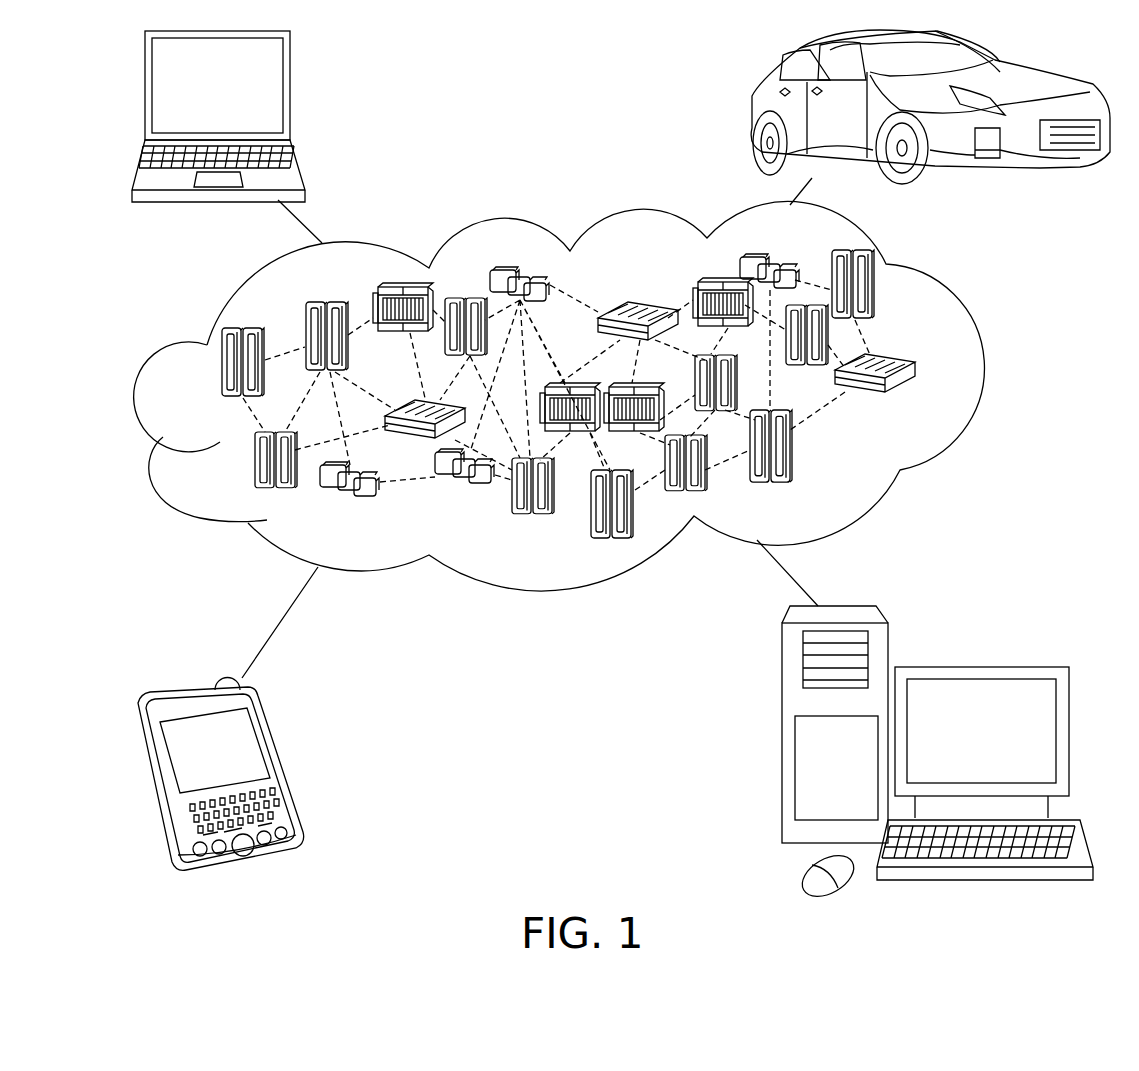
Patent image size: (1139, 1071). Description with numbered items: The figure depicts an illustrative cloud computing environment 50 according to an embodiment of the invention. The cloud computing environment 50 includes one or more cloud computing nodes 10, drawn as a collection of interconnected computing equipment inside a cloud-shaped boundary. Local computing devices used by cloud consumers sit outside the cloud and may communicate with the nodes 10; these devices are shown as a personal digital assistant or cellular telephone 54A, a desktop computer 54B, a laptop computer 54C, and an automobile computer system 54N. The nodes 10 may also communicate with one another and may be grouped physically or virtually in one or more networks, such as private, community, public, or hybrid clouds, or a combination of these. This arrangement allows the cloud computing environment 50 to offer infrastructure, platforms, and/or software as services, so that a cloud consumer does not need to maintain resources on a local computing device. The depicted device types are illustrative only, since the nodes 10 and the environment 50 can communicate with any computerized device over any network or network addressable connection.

The cloud computing environment 50 is at (983, 371).
The cloud computing node 10 is at (930, 404).
The personal digital assistant or cellular telephone 54A is at (282, 765).
The desktop computer 54B is at (978, 666).
The laptop computer 54C is at (292, 93).
The automobile computer system 54N is at (745, 106).